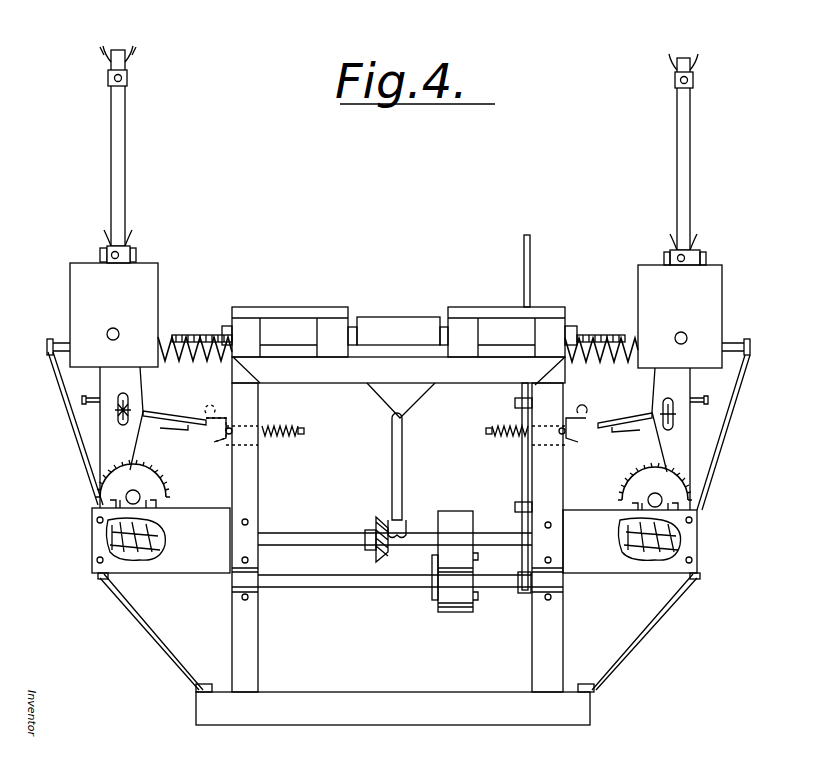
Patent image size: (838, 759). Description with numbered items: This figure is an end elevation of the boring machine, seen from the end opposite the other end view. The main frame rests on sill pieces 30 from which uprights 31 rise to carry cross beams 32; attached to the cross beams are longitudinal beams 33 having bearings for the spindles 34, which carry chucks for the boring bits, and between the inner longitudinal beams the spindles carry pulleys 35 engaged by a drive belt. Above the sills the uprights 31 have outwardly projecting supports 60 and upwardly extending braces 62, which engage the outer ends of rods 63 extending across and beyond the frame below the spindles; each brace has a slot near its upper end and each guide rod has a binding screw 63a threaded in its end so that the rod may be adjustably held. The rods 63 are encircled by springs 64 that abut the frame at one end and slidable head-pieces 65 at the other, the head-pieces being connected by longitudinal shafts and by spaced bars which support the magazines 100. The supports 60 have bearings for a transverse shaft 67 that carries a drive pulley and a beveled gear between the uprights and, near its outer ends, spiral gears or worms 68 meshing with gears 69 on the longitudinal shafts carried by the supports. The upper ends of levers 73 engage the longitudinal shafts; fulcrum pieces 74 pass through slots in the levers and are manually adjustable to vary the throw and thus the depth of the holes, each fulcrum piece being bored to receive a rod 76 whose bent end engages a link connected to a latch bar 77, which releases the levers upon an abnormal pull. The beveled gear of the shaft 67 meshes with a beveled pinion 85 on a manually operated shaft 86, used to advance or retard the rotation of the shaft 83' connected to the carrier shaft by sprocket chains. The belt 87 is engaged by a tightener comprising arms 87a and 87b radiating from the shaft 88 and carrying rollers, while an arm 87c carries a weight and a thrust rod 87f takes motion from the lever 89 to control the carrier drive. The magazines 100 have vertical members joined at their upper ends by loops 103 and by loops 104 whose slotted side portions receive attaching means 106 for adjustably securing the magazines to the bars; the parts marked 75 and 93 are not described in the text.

The sill pieces 30 is at (590, 702).
The uprights 31 is at (258, 626).
The cross beams 32 is at (462, 370).
The longitudinal beams 33 is at (232, 323).
The spindles 34 is at (352, 327).
The pulleys 35 is at (398, 320).
The supports 60 is at (394, 540).
The braces 62 is at (80, 432).
The rods 63 is at (58, 322).
The binding screw 63a is at (762, 349).
The springs 64 is at (205, 362).
The head-pieces 65 is at (396, 315).
The transverse shaft 67 is at (310, 533).
The spiral gears or worms 68 is at (105, 548).
The gears 69 is at (160, 491).
The levers 73 is at (128, 443).
The fulcrum pieces 74 is at (120, 393).
The pin 75 is at (120, 425).
The rod 76 is at (172, 416).
The latch bar 77 is at (218, 442).
The shaft 83' is at (414, 482).
The beveled pinion 85 is at (385, 544).
The manually operated shaft 86 is at (402, 462).
The belt 87 is at (432, 580).
The arm 87a is at (440, 600).
The arm 87b is at (432, 570).
The arm 87c is at (520, 522).
The thrust rod 87f is at (522, 470).
The shaft 88 is at (348, 587).
The lever 89 is at (530, 283).
The fork 93 is at (128, 236).
The magazines 100 is at (125, 200).
The loops 103 is at (127, 78).
The loops 104 is at (120, 257).
The attaching means 106 is at (133, 250).